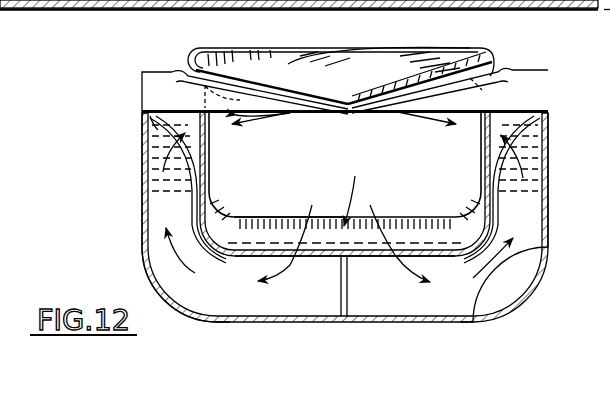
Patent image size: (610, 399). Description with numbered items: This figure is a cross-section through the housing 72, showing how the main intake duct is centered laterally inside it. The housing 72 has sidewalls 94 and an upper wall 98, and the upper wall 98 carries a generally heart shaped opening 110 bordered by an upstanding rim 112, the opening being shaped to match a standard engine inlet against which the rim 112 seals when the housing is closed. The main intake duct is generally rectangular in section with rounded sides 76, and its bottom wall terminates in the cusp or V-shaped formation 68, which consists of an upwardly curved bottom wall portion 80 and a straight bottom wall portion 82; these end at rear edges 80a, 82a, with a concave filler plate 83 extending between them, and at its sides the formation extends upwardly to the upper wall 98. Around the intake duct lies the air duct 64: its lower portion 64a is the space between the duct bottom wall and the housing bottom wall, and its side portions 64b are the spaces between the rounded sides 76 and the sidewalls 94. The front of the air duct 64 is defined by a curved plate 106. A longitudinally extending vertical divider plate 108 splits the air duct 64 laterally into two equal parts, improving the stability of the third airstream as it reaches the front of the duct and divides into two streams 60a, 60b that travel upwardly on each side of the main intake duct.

The airstream 60a is at (150, 260).
The airstream 60b is at (534, 268).
The air duct 64 is at (345, 271).
The lower portion of the air duct 64a is at (180, 214).
The side portions of the air duct 64b is at (535, 217).
The cusp or V-shaped formation 68 is at (387, 218).
The housing 72 is at (138, 186).
The rounded sides 76 is at (209, 147).
The upwardly curved bottom wall portion 80 is at (414, 216).
The rear edge 80a is at (255, 217).
The straight bottom wall portion 82 is at (435, 258).
The rear edge 82a is at (248, 257).
The concave filler plate 83 is at (296, 214).
The sidewalls 94 is at (146, 153).
The upper wall 98 is at (155, 78).
The curved plate 106 is at (147, 132).
The vertical divider plate 108 is at (348, 288).
The heart shaped opening 110 is at (453, 60).
The upstanding rim 112 is at (498, 60).